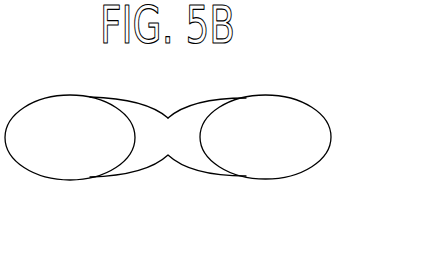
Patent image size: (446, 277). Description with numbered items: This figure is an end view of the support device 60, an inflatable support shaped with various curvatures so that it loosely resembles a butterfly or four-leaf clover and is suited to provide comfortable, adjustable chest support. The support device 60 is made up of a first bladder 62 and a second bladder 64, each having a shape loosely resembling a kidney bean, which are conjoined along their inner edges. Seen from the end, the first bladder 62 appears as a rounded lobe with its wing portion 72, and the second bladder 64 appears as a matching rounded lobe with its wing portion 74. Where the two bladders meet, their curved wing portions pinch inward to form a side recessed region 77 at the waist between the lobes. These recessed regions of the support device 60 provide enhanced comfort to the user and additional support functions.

The support device 60 is at (212, 144).
The first bladder 62 is at (138, 113).
The second bladder 64 is at (199, 115).
The wing portion 72 is at (72, 110).
The wing portion 74 is at (273, 171).
The side recessed region 77 is at (168, 181).